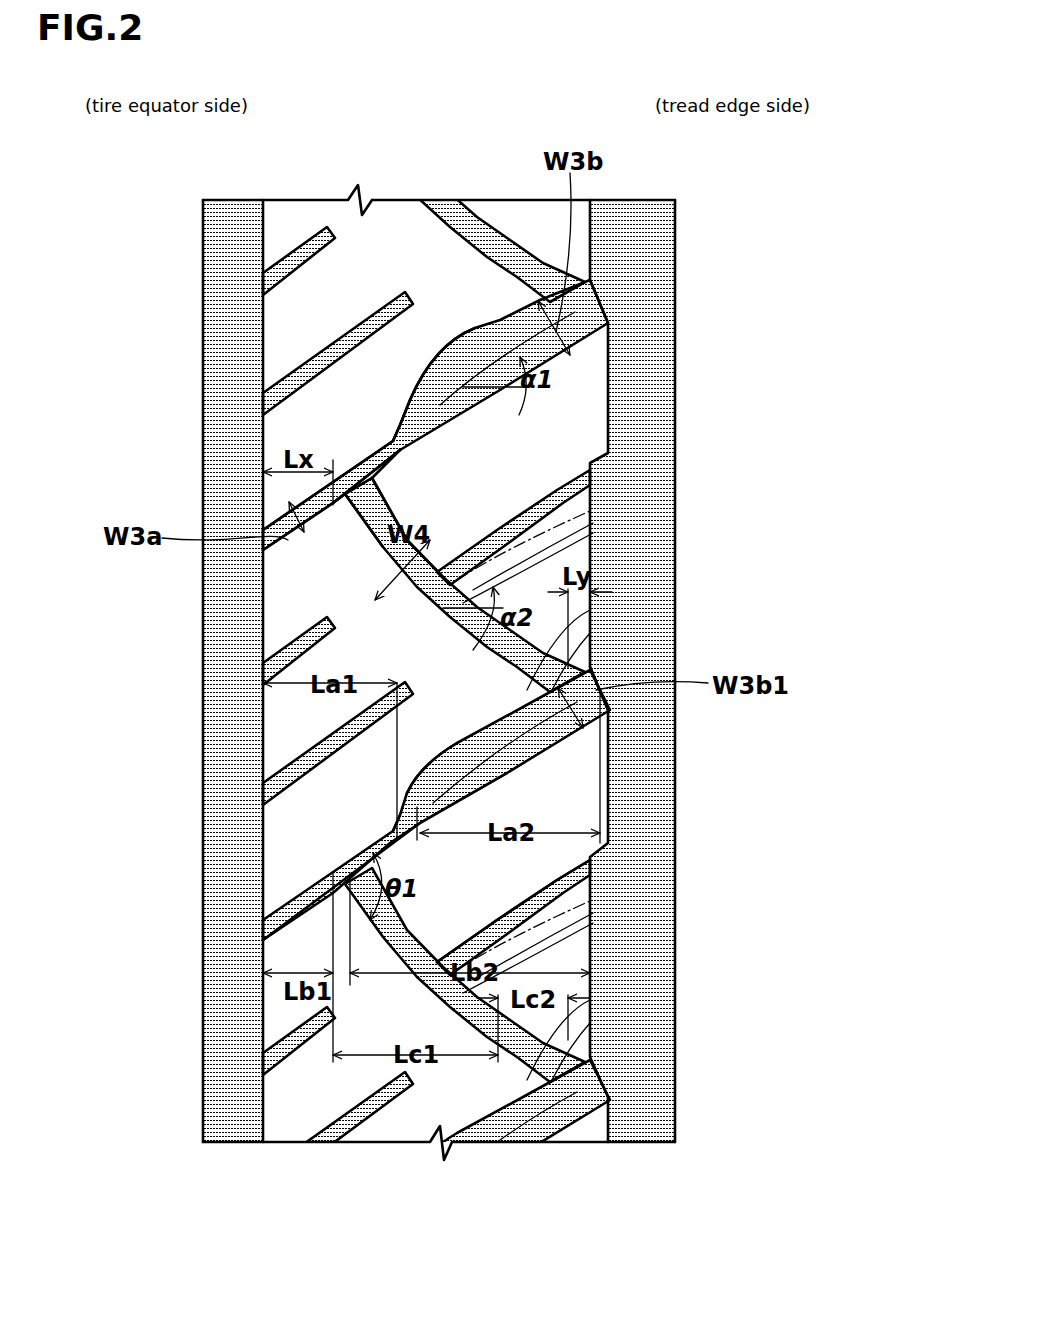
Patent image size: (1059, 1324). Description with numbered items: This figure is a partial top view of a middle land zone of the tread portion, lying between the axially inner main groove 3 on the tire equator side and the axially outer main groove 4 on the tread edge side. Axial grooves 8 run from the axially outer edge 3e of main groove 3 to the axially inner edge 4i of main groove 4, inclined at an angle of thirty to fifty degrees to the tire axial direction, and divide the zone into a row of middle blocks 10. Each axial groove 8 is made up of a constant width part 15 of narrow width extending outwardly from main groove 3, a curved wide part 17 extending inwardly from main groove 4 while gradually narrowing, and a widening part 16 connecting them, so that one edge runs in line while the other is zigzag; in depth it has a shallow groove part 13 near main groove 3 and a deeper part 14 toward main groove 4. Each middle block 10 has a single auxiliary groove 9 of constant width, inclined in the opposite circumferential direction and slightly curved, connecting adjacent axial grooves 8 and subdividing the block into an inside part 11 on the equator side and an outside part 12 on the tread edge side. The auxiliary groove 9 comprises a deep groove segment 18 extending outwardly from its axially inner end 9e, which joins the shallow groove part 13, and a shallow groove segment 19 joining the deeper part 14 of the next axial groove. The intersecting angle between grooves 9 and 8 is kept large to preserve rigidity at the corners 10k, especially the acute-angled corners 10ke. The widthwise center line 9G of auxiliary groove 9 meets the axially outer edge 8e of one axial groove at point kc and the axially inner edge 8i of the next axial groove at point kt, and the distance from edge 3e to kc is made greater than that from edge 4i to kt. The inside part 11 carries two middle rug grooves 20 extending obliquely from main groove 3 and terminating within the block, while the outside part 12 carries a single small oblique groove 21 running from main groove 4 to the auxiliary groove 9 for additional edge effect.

The axially inner main groove 3 is at (226, 246).
The axially outer edge of axially inner main groove 3e is at (261, 245).
The axially outer main groove 4 is at (647, 246).
The axially inner edge of axially outer main groove 4i is at (612, 348).
The axial groove 8 is at (523, 310).
The axially outer edge of axial groove 8e is at (400, 412).
The axially inner edge of next axial groove 8i is at (612, 797).
The auxiliary groove 9 is at (593, 533).
The axially inner end of auxiliary groove 9e is at (365, 500).
The widthwise center line of auxiliary groove 9G is at (590, 511).
The middle block 10 is at (283, 1013).
The inside part 11 is at (283, 627).
The outside part 12 is at (577, 405).
The corner of middle block 10k is at (340, 500).
The acute-angled corner of middle block 10ke is at (375, 462).
The shallow groove part 13 is at (305, 507).
The deeper part 14 is at (385, 440).
The constant width part 15 is at (335, 893).
The widening part 16 is at (407, 807).
The curved wide part 17 is at (430, 762).
The deep groove segment 18 is at (545, 880).
The shallow groove segment 19 is at (590, 607).
The middle rug groove 20 is at (300, 650).
The small oblique groove 21 is at (592, 480).
The intersecting point of center line 9G with edge 8e kc is at (335, 565).
The intersecting point of center line 9G with edge 8i kt is at (590, 633).